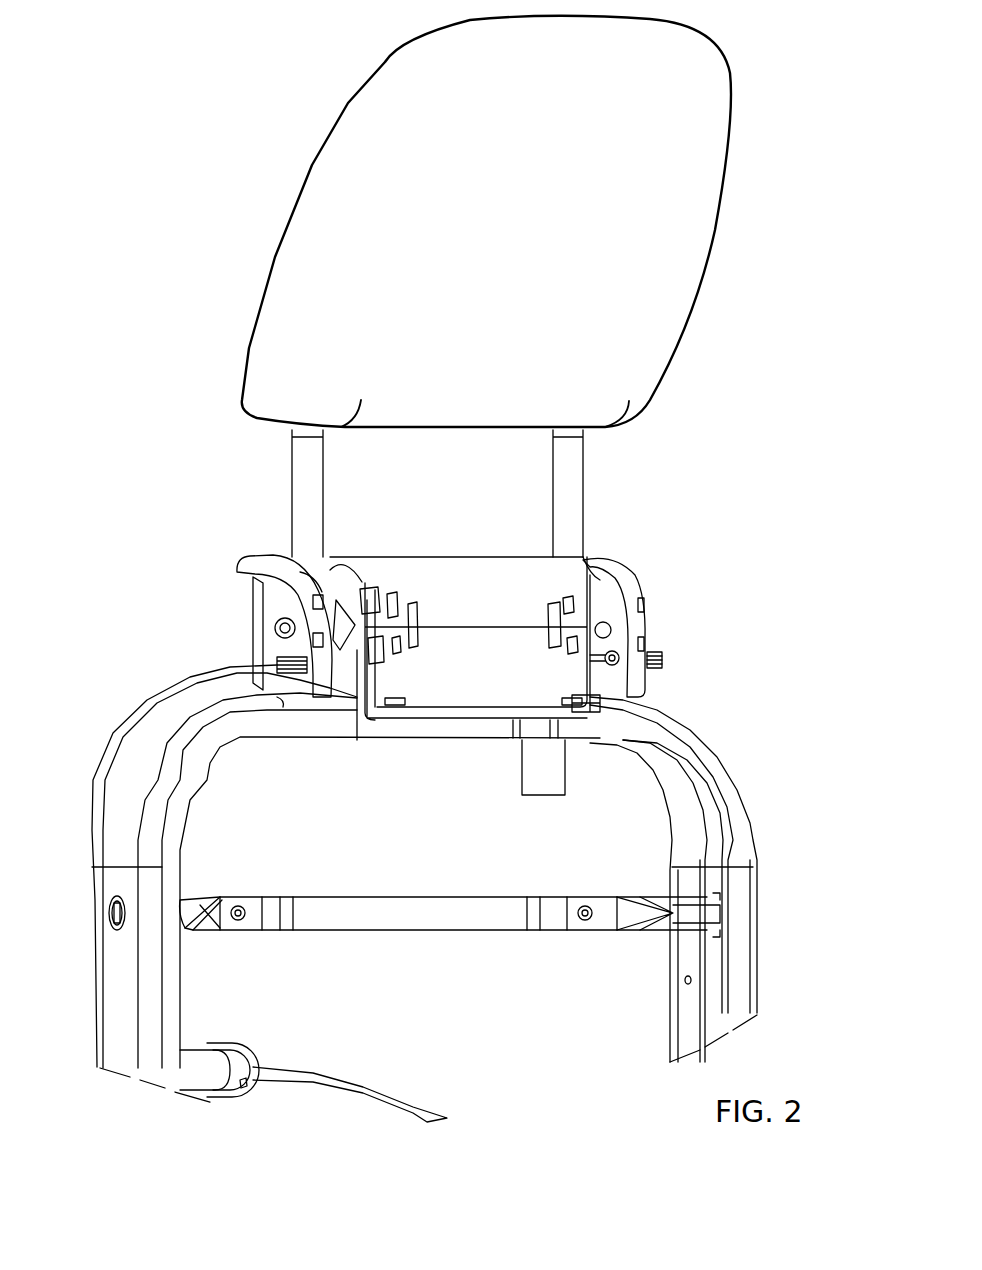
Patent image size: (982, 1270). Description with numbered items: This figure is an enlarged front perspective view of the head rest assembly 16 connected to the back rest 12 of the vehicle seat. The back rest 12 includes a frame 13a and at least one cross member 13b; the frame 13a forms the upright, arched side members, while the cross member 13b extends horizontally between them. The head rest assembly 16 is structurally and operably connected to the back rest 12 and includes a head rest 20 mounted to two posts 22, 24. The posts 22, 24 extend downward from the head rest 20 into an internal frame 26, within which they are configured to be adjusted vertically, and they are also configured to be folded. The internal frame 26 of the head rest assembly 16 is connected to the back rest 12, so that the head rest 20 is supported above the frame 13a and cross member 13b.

The back rest 12 is at (795, 867).
The frame 13a is at (730, 820).
The cross member 13b is at (427, 895).
The head rest assembly 16 is at (688, 437).
The head rest 20 is at (677, 230).
The post 22 is at (310, 500).
The post 24 is at (573, 497).
The internal frame 26 is at (645, 623).